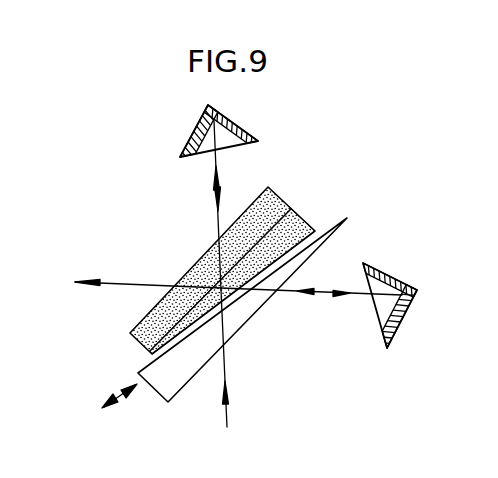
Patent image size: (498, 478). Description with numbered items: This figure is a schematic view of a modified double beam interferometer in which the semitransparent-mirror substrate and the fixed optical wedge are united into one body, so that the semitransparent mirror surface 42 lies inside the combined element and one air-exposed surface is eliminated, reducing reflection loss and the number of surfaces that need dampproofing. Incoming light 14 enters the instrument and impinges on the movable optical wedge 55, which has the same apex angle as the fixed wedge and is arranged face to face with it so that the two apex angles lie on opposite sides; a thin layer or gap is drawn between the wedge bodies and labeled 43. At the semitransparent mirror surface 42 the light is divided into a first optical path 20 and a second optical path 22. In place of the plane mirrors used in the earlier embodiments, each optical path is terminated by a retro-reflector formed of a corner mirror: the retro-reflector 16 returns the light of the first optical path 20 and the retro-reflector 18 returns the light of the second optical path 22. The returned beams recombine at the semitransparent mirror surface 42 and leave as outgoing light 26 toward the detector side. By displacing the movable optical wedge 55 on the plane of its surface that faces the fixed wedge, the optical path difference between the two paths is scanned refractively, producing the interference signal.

The incoming light 14 is at (229, 414).
The retro-reflector 16 is at (378, 330).
The retro-reflector 18 is at (191, 158).
The first optical path 20 is at (323, 295).
The second optical path 22 is at (213, 194).
The outgoing light 26 is at (122, 282).
The semitransparent mirror surface 42 is at (293, 211).
The wedge layer 43 is at (308, 222).
The movable optical wedge 55 is at (157, 398).